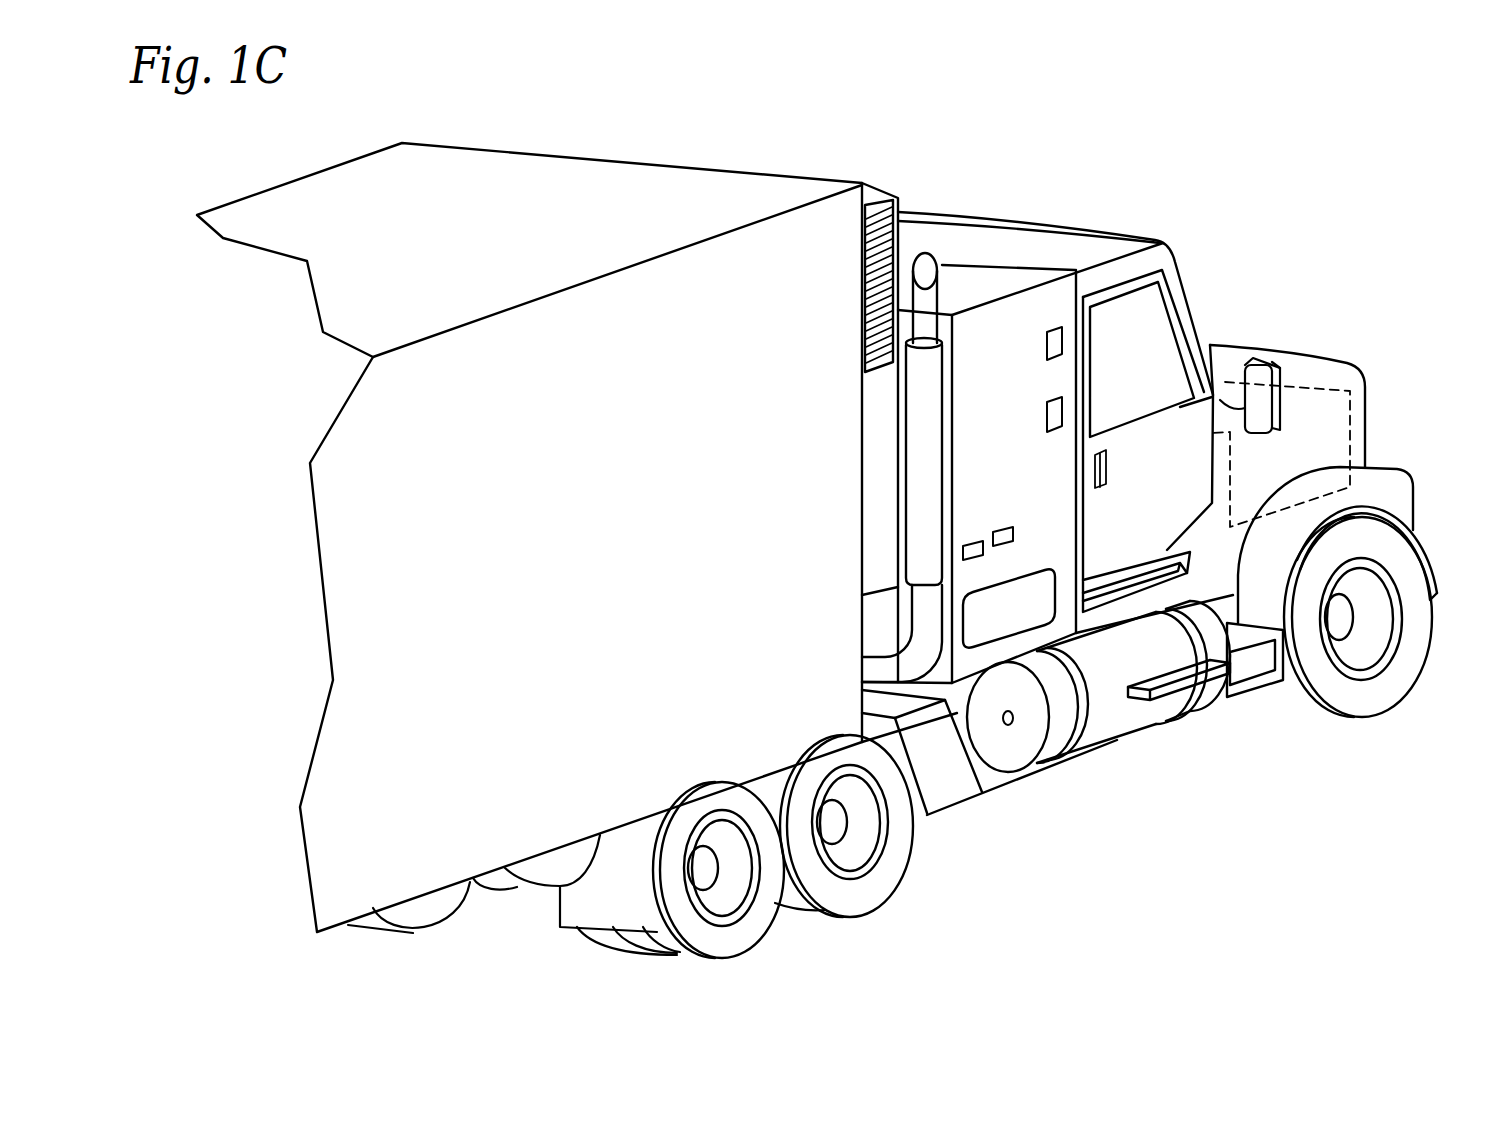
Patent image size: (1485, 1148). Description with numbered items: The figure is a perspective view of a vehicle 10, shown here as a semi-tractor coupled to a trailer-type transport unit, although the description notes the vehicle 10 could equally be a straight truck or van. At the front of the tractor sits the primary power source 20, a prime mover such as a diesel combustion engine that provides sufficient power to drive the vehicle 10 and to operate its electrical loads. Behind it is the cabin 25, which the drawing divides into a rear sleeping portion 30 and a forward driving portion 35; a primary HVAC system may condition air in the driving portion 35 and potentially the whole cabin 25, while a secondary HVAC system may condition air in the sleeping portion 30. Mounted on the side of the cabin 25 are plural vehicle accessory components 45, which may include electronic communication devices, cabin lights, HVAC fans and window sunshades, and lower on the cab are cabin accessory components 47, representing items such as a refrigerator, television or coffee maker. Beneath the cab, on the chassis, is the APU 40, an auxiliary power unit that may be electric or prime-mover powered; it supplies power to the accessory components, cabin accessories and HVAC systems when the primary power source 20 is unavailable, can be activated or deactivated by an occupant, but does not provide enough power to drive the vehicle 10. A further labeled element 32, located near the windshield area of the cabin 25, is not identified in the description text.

The vehicle 10 is at (1083, 138).
The primary power source 20 is at (1330, 392).
The cabin 25 is at (1182, 262).
The sleeping portion 30 is at (981, 275).
The side mirror 32 is at (1222, 412).
The driving portion 35 is at (1119, 218).
The APU 40 is at (947, 779).
The vehicle accessory components 45 is at (1061, 400).
The cabin accessory components 47 is at (973, 560).